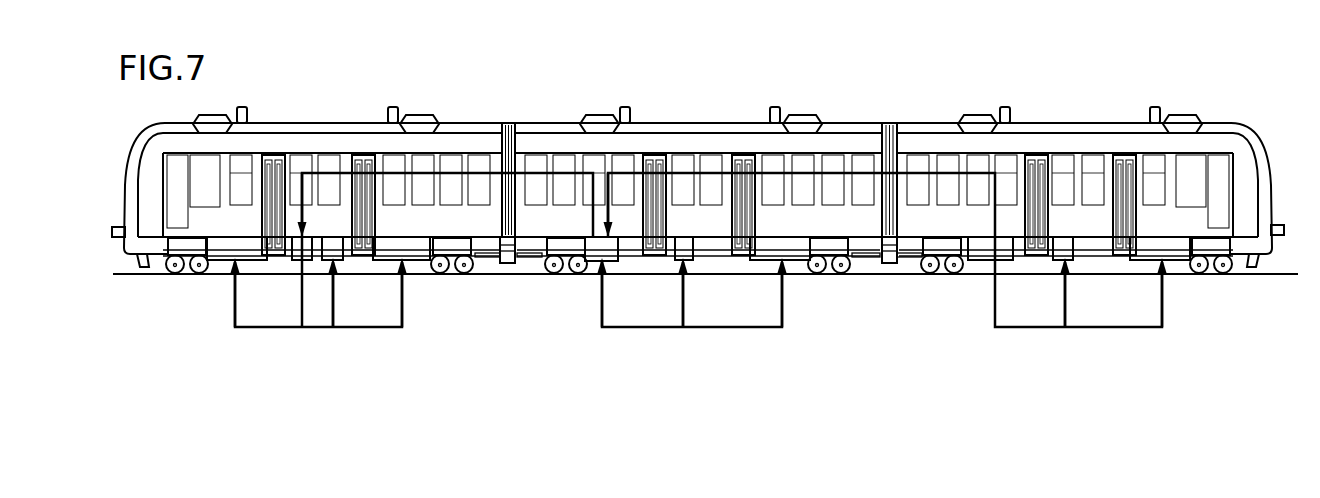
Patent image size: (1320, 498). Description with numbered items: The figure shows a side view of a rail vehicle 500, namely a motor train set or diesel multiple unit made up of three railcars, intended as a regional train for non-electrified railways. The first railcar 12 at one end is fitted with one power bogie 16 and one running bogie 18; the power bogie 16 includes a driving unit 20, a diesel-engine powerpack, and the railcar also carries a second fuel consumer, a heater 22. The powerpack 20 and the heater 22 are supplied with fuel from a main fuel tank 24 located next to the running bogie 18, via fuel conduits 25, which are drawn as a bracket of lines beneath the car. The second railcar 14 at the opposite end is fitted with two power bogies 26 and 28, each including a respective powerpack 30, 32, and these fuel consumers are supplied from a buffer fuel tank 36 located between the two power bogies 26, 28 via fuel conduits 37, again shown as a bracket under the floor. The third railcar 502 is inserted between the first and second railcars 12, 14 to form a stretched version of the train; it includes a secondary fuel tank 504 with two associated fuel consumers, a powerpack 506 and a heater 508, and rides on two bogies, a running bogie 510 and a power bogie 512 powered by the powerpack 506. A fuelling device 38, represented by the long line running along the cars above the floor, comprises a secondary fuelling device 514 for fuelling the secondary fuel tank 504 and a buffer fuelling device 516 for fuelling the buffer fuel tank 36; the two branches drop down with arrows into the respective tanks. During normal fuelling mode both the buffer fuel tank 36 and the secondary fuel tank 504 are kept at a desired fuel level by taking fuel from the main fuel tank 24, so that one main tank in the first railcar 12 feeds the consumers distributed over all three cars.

The first railcar 12 is at (1078, 143).
The second railcar 14 is at (305, 145).
The power bogie 16 is at (1210, 252).
The running bogie 18 is at (930, 260).
The driving unit 20 is at (1173, 250).
The heater 22 is at (1067, 253).
The main fuel tank 24 is at (985, 252).
The fuel conduits 25 is at (1045, 328).
The power bogie 26 is at (190, 255).
The power bogie 28 is at (453, 253).
The powerpack 30 is at (226, 254).
The powerpack 32 is at (413, 250).
The buffer fuel tank 36 is at (300, 254).
The fuel conduits 37 is at (320, 328).
The fuelling device 38 is at (668, 63).
The rail vehicle 500 is at (700, 96).
The third railcar 502 is at (550, 140).
The secondary fuel tank 504 is at (595, 253).
The powerpack 506 is at (792, 253).
The heater 508 is at (690, 253).
The running bogie 510 is at (567, 253).
The power bogie 512 is at (833, 253).
The secondary fuelling device 514 is at (680, 170).
The buffer fuelling device 516 is at (565, 168).